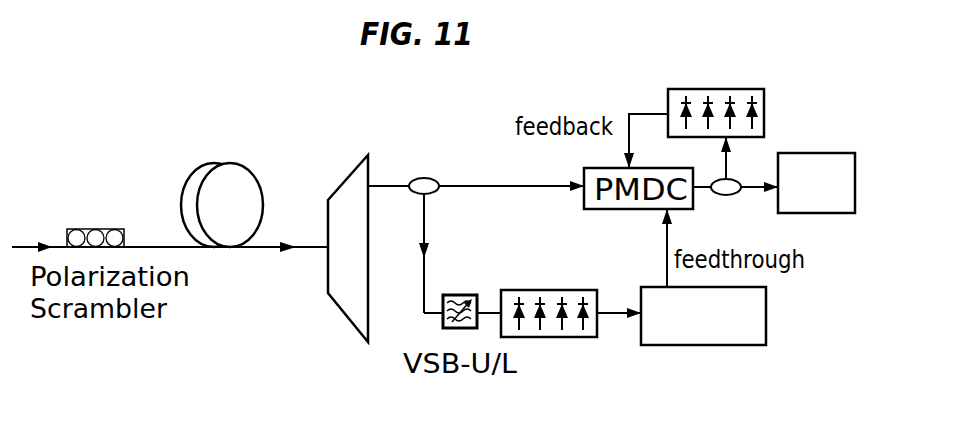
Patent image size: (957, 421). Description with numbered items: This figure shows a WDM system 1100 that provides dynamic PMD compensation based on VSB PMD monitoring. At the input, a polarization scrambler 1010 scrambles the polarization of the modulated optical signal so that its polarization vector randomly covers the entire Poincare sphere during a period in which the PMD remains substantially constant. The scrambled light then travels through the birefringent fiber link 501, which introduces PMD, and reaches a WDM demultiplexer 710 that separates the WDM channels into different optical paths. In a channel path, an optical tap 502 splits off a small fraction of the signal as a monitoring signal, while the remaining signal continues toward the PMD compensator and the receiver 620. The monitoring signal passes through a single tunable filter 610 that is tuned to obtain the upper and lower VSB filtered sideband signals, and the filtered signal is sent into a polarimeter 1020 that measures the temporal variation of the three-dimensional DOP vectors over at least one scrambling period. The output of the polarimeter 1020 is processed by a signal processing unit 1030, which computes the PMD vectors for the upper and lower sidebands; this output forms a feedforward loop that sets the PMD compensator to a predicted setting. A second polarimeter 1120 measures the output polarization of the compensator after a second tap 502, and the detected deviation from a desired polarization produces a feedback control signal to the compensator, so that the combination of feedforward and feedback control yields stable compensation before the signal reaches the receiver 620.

The WDM system 1100 is at (226, 72).
The polarization scrambler 1010 is at (92, 228).
The fiber link 501 is at (267, 210).
The WDM demultiplexer 710 is at (330, 306).
The optical splitter (tap) 502 is at (432, 178).
The tunable filter 610 is at (441, 327).
The polarimeter 1020 is at (548, 338).
The signal processing unit 1030 is at (690, 346).
The polarimeter 1120 is at (738, 88).
The receiver 620 is at (822, 151).